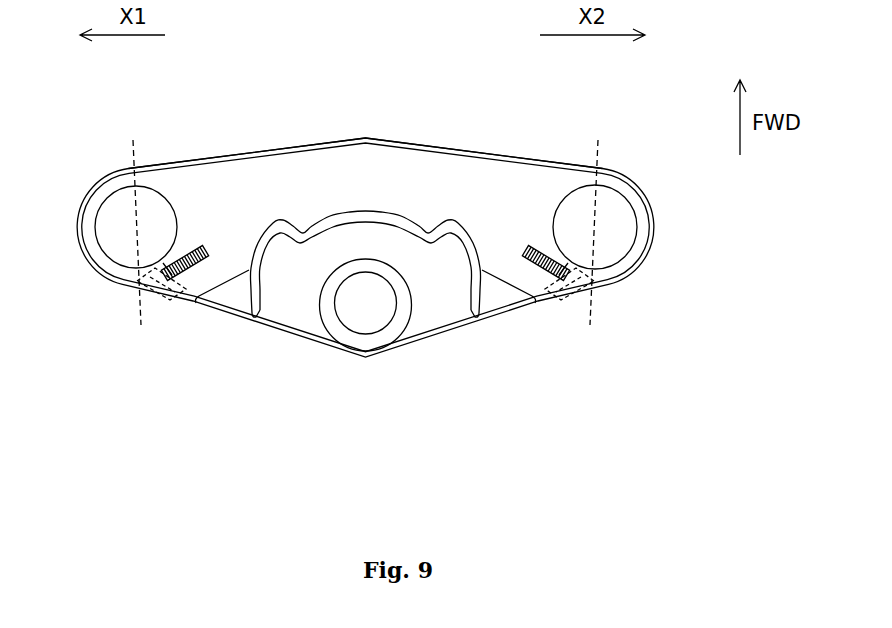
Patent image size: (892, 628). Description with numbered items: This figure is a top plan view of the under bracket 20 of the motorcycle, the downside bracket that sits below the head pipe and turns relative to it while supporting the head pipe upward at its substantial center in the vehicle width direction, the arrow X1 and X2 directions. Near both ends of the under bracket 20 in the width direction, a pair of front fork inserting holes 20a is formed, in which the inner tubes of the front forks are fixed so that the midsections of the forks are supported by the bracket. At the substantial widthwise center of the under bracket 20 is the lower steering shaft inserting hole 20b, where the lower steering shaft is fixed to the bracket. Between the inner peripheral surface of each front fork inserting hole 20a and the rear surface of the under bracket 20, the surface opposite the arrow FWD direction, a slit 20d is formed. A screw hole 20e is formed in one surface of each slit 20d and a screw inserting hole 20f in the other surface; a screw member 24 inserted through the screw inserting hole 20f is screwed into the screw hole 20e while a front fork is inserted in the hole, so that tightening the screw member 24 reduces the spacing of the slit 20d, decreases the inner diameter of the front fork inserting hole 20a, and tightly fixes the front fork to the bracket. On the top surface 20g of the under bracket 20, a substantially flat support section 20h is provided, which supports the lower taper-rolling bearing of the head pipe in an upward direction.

The under bracket 20 is at (445, 308).
The front fork inserting hole 20a is at (98, 214).
The lower steering shaft inserting hole 20b is at (394, 298).
The slit 20d is at (203, 312).
The screw hole 20e is at (197, 247).
The screw inserting hole 20f is at (373, 219).
The top surface 20g is at (410, 167).
The support section 20h is at (331, 317).
The screw member 24 is at (372, 312).